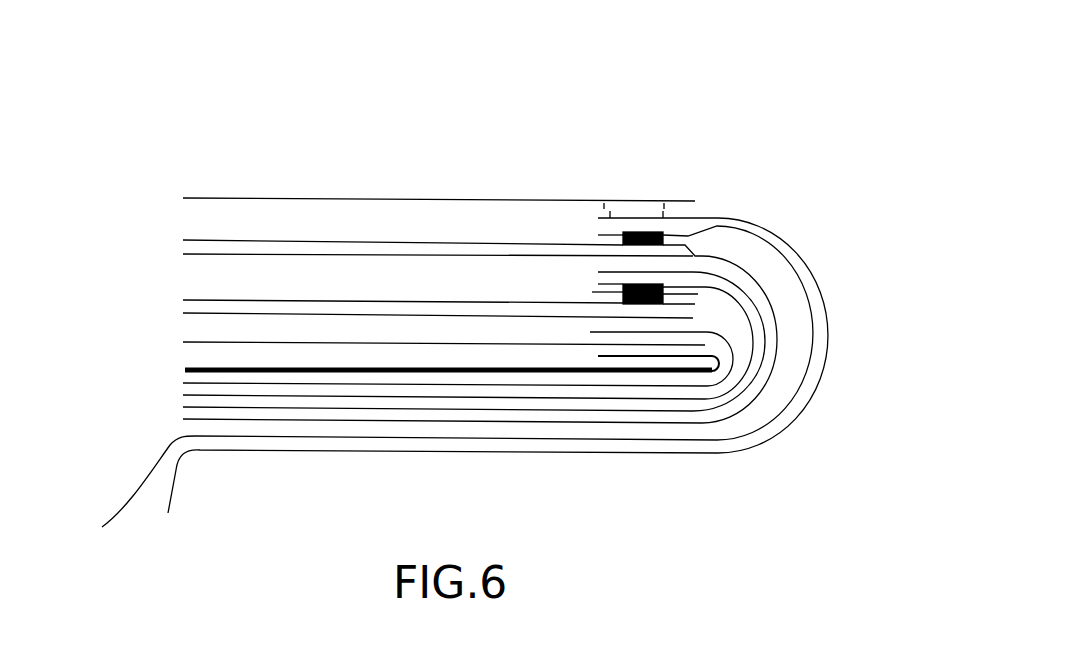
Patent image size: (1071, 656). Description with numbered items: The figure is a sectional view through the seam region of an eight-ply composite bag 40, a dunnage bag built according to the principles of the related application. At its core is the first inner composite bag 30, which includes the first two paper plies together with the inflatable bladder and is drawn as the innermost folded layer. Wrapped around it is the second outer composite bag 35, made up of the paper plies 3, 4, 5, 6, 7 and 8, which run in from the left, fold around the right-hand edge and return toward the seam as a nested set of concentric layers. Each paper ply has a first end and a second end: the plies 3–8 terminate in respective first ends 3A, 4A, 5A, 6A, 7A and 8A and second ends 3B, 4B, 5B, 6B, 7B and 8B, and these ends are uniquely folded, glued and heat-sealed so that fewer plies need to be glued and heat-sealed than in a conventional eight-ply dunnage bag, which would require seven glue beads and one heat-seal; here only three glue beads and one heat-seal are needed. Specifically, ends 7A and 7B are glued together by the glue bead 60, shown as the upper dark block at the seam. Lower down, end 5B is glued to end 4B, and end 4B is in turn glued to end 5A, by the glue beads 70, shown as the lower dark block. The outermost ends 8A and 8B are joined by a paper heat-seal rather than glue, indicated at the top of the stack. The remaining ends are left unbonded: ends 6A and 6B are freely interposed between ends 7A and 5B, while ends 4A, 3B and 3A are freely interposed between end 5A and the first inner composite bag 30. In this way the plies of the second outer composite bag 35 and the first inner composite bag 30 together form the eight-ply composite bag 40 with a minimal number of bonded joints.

The paper ply 3 is at (454, 420).
The paper ply 4 is at (473, 364).
The paper ply 5 is at (489, 304).
The paper ply 6 is at (464, 310).
The paper ply 7 is at (446, 317).
The paper ply 8 is at (458, 313).
The first end of paper ply 3 3A is at (731, 353).
The first end of paper ply 4 4A is at (697, 316).
The first end of paper ply 5 5A is at (700, 299).
The first end of paper ply 6 6A is at (697, 256).
The first end of paper ply 7 7A is at (688, 238).
The first end of paper ply 8 8A is at (689, 199).
The second end of paper ply 3 3B is at (588, 333).
The second end of paper ply 4 4B is at (596, 293).
The second end of paper ply 5 5B is at (597, 277).
The second end of paper ply 6 6B is at (601, 265).
The second end of paper ply 7 7B is at (596, 231).
The second end of paper ply 8 8B is at (619, 212).
The first inner composite bag 30 is at (185, 370).
The second outer composite bag 35 is at (387, 473).
The eight-ply composite bag 40 is at (883, 88).
The glue bead 60 is at (651, 216).
The glue beads 70 is at (643, 304).